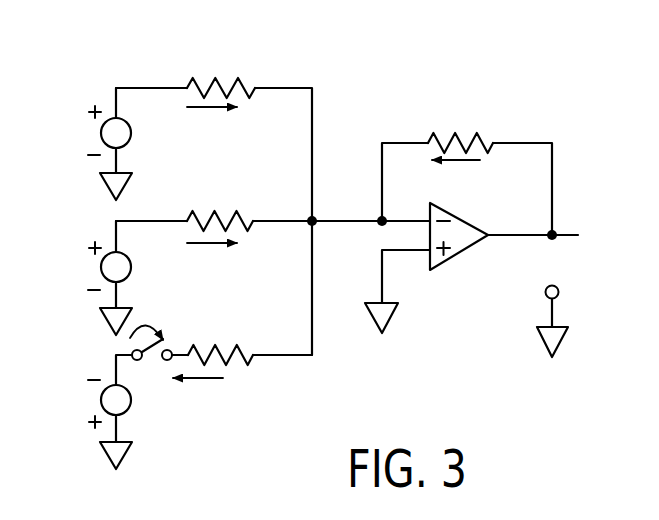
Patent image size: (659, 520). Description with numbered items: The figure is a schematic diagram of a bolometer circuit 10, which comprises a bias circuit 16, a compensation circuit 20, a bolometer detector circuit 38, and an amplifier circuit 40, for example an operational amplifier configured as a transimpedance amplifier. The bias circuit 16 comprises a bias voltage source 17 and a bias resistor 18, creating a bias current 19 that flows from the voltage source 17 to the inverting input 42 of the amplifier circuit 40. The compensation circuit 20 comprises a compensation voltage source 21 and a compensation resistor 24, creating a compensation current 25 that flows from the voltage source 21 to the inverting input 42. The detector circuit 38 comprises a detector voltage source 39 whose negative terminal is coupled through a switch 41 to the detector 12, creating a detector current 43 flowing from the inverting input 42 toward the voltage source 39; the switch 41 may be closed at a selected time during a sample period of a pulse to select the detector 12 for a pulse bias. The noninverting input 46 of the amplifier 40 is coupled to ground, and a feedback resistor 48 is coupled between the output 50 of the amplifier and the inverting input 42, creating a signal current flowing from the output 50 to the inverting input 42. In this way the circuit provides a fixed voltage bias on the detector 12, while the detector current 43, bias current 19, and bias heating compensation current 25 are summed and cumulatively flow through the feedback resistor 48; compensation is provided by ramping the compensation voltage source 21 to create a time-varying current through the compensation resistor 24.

The bolometer circuit 10 is at (420, 60).
The detector 12 is at (233, 360).
The bias circuit 16 is at (242, 40).
The voltage source Vbias 17 is at (100, 133).
The bias resistor Rbias 18 is at (245, 88).
The current Ibias 19 is at (188, 107).
The compensation circuit 20 is at (257, 178).
The voltage source Vcomp 21 is at (110, 252).
The compensation resistor Rcomp 24 is at (247, 220).
The compensation current Icomp 25 is at (212, 242).
The bolometer detector circuit 38 is at (257, 312).
The voltage source Vdet 39 is at (110, 387).
The amplifier circuit 40 is at (565, 180).
The switch 41 is at (153, 363).
The inverting input 42 is at (413, 218).
The current Idet 43 is at (210, 380).
The noninverting input 46 is at (407, 255).
The feedback resistor Rf 48 is at (487, 137).
The output Vout 50 is at (502, 238).